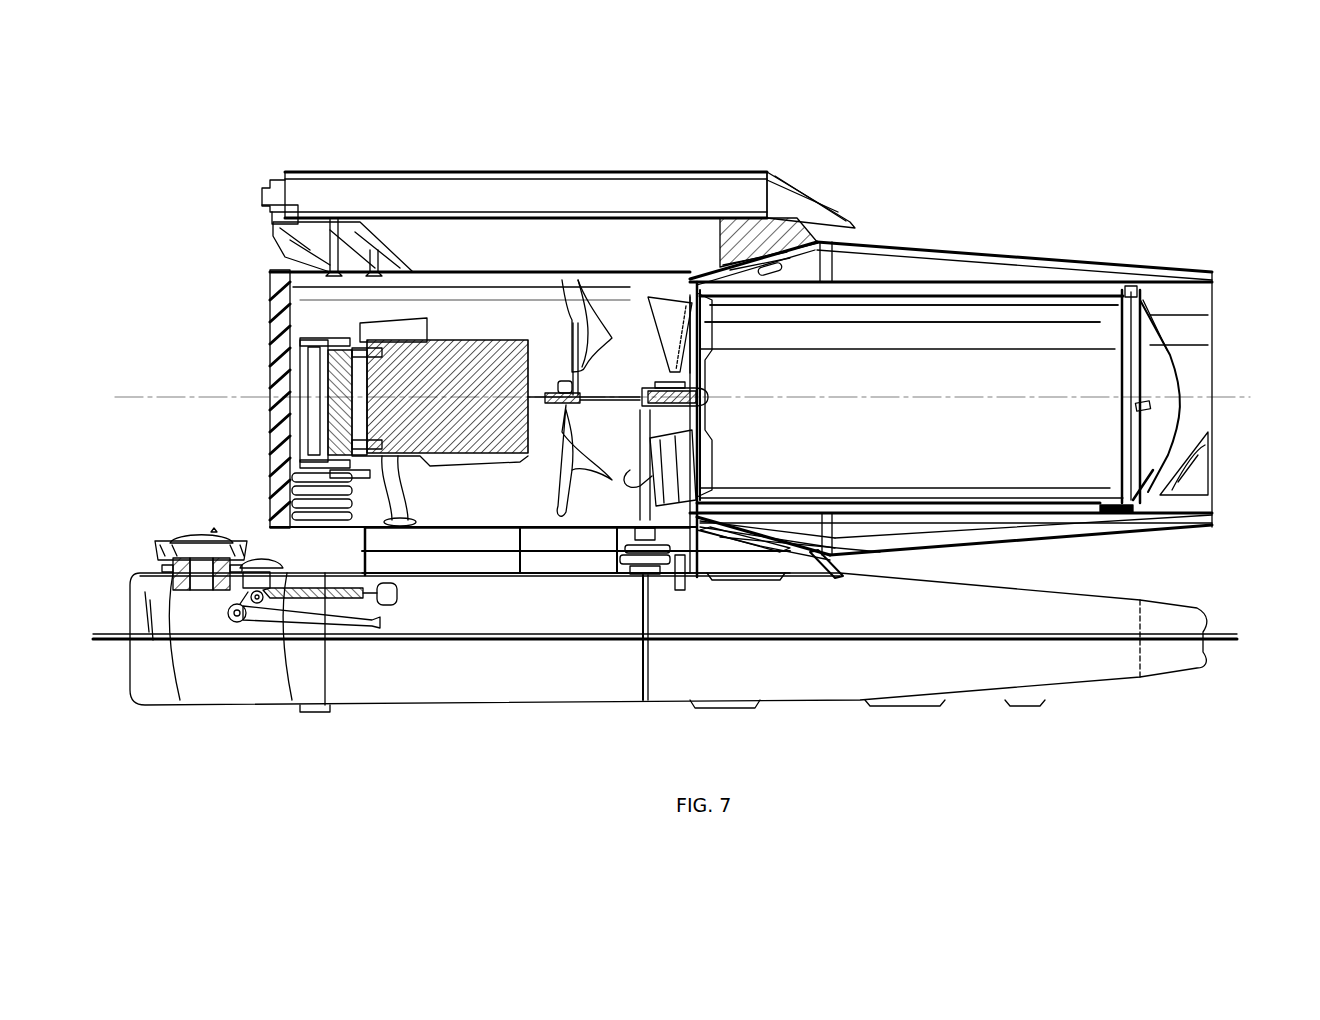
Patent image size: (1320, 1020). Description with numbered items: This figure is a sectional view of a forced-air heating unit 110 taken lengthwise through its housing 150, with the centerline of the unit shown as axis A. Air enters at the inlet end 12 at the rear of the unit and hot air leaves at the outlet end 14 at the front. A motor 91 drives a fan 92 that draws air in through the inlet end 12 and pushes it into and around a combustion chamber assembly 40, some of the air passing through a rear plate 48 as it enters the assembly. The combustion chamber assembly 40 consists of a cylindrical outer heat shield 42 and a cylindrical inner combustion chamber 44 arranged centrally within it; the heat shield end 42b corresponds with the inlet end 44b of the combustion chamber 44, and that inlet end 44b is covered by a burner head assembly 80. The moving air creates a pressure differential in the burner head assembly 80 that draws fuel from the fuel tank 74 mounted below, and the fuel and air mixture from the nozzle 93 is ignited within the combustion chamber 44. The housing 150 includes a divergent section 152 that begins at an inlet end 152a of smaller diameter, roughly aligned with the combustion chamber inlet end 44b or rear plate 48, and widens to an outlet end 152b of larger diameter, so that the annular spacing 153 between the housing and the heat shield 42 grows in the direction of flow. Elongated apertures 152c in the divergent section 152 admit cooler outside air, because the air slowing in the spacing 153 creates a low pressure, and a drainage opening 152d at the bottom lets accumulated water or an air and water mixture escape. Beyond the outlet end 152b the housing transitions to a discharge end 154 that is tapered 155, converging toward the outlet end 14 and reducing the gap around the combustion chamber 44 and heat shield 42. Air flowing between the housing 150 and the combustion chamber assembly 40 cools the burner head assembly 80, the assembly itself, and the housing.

The heating unit 110 is at (246, 96).
The inlet end 12 is at (224, 322).
The outlet end 14 is at (1228, 326).
The combustion chamber assembly 40 is at (990, 262).
The heat shield 42 is at (1022, 268).
The heat shield end 42b is at (668, 508).
The combustion chamber 44 is at (1082, 290).
The inlet end of the combustion chamber 44b is at (742, 478).
The rear plate 48 is at (705, 346).
The fuel tank 74 is at (547, 680).
The burner head assembly 80 is at (660, 292).
The motor 91 is at (495, 355).
The fan 92 is at (595, 340).
The nozzle 93 is at (662, 386).
The housing 150 is at (958, 248).
The divergent section 152 is at (705, 560).
The inlet end of the divergent section 152a is at (695, 268).
The outlet end of the divergent section 152b is at (830, 238).
The apertures 152c is at (767, 267).
The drainage opening 152d is at (830, 558).
The annular spacing 153 is at (812, 268).
The housing discharge end 154 is at (1206, 218).
The tapered shape 155 is at (905, 260).
The central axis A is at (1250, 396).